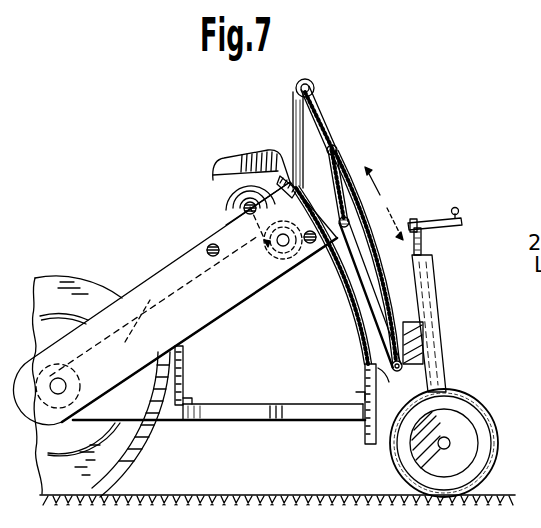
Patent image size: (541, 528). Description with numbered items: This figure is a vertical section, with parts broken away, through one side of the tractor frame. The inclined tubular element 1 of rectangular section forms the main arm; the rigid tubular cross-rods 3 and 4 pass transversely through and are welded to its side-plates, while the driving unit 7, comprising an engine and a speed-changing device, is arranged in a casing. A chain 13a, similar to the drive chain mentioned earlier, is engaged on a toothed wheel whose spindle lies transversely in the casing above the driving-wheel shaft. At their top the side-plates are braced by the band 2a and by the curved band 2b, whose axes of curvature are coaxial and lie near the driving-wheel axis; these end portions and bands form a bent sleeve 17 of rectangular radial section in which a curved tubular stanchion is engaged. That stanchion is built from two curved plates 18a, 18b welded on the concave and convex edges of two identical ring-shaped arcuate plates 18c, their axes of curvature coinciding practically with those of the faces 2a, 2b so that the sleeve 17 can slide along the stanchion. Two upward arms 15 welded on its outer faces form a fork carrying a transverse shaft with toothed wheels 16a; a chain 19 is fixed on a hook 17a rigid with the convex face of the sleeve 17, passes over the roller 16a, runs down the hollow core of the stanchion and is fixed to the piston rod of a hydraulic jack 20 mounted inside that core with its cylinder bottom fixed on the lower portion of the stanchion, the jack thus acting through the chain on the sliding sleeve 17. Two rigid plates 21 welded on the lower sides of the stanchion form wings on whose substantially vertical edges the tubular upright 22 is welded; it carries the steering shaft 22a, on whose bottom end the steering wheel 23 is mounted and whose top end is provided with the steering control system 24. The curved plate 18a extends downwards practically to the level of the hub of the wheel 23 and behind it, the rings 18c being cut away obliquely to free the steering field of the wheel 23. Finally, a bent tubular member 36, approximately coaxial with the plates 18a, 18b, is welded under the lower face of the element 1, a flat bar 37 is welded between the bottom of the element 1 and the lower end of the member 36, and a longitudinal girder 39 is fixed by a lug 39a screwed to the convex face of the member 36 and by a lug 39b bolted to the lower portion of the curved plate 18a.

The tubular element 1 is at (157, 288).
The band 2a is at (278, 176).
The curved band 2b is at (360, 197).
The tubular rod 3 is at (209, 247).
The tubular rod 4 is at (312, 245).
The driving unit 7 is at (240, 150).
The chain 13a is at (127, 333).
The arm 15 is at (296, 125).
The toothed wheel 16a is at (312, 81).
The bent sleeve 17 is at (350, 165).
The hook 17a is at (338, 153).
The curved plate 18a is at (360, 327).
The curved plate 18b is at (378, 213).
The arcuate plate 18c is at (385, 374).
The chain 19 is at (328, 122).
The hydraulic jack 20 is at (370, 297).
The rigid plate 21 is at (422, 346).
The tubular upright 22 is at (427, 296).
The steering shaft 22a is at (420, 250).
The steering wheel 23 is at (483, 414).
The control system 24 is at (430, 210).
The bent tubular member 36 is at (181, 373).
The flat bar 37 is at (143, 423).
The longitudinal girder 39 is at (278, 406).
The lug 39a is at (188, 395).
The lug 39b is at (362, 391).